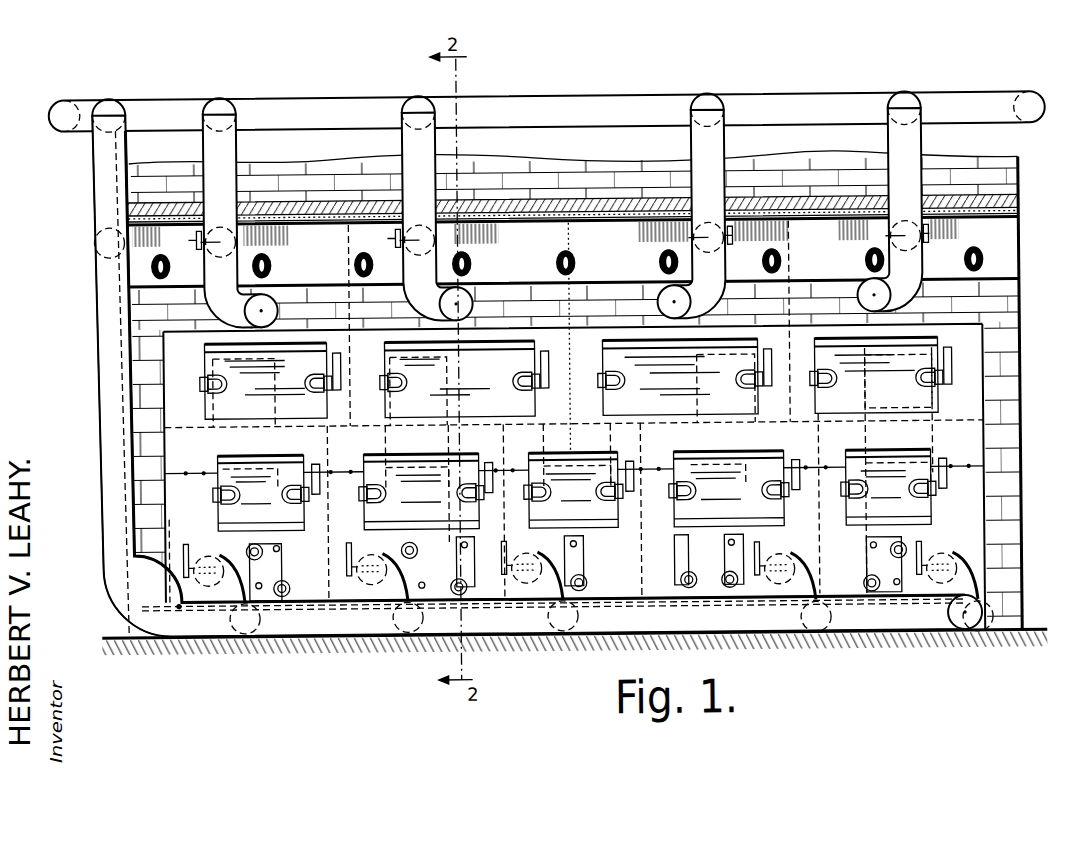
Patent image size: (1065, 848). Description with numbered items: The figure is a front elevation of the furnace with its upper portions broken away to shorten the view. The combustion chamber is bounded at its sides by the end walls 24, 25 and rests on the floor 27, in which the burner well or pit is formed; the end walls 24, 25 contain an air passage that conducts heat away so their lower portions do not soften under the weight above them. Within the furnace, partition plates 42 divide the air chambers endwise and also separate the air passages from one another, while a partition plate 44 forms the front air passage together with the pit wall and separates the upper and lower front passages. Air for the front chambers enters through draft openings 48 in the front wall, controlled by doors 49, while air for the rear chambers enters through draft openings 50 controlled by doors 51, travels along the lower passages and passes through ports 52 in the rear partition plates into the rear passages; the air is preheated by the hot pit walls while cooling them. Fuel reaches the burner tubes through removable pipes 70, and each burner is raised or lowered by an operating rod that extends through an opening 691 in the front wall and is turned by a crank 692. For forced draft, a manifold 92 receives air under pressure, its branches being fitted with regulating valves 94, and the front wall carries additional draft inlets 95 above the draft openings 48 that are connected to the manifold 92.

The end wall 24 is at (125, 318).
The end wall 25 is at (1027, 596).
The floor 27 is at (160, 212).
The partition plate 42 is at (350, 243).
The partition plate 44 is at (200, 428).
The draft opening 48 is at (240, 345).
The door 49 is at (635, 380).
The draft opening 50 is at (225, 462).
The door 51 is at (240, 520).
The port 52 is at (280, 442).
The fuel supply pipe 70 is at (275, 553).
The opening 691 is at (280, 576).
The crank 692 is at (675, 586).
The manifold 92 is at (540, 112).
The regulating valve 94 is at (232, 240).
The draft inlet 95 is at (212, 152).